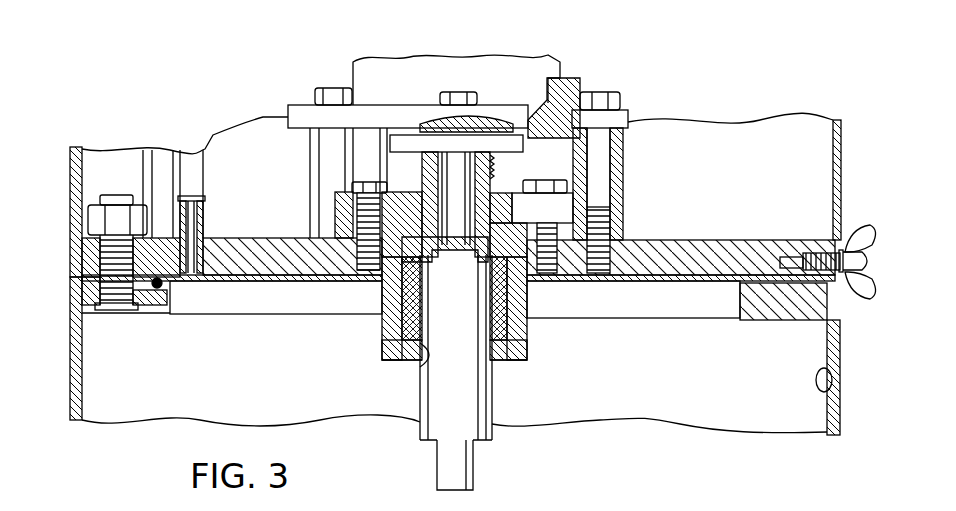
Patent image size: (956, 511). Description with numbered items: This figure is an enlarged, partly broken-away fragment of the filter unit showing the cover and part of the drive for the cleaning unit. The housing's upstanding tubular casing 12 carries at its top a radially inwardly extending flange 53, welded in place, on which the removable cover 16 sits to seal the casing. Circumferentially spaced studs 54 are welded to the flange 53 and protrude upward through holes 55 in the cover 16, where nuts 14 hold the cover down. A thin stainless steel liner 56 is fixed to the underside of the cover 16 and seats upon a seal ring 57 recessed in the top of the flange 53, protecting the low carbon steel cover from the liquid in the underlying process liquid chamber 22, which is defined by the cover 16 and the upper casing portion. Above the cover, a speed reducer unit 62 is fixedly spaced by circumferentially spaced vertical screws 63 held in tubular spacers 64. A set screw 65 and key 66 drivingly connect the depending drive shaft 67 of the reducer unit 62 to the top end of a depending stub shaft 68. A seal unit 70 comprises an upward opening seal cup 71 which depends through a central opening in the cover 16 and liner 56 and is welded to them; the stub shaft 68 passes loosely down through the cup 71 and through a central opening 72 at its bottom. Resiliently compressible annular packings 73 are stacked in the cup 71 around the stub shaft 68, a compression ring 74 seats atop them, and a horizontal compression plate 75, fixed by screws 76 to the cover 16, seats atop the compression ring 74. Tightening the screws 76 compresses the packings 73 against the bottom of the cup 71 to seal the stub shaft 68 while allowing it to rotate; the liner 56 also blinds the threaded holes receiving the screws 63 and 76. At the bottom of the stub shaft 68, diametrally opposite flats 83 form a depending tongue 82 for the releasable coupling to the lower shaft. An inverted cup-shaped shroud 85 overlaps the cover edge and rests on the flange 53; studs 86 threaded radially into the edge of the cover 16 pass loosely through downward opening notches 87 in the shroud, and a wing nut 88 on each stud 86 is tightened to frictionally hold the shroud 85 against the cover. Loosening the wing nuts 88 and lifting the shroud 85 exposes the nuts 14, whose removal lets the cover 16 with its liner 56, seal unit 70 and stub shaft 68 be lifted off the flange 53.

The tubular casing 12 is at (78, 340).
The nuts 14 is at (120, 213).
The cover 16 is at (237, 250).
The process liquid chamber 22 is at (832, 393).
The flange 53 is at (148, 300).
The studs 54 is at (113, 310).
The holes 55 is at (72, 260).
The liner 56 is at (248, 281).
The seal ring 57 is at (173, 287).
The speed reducer unit 62 is at (503, 63).
The screws 63 is at (600, 97).
The tubular spacers 64 is at (623, 148).
The set screw 65 is at (493, 173).
The key 66 is at (420, 173).
The drive shaft 67 is at (445, 167).
The stub shaft 68 is at (472, 393).
The seal unit 70 is at (535, 355).
The seal cup 71 is at (527, 332).
The central opening 72 is at (418, 368).
The annular packings 73 is at (383, 323).
The compression ring 74 is at (510, 233).
The compression plate 75 is at (343, 207).
The screws 76 is at (350, 183).
The tongue 82 is at (447, 477).
The flats 83 is at (437, 458).
The shroud 85 is at (72, 162).
The studs 86 is at (815, 250).
The notch 87 is at (840, 283).
The wing nut 88 is at (845, 292).